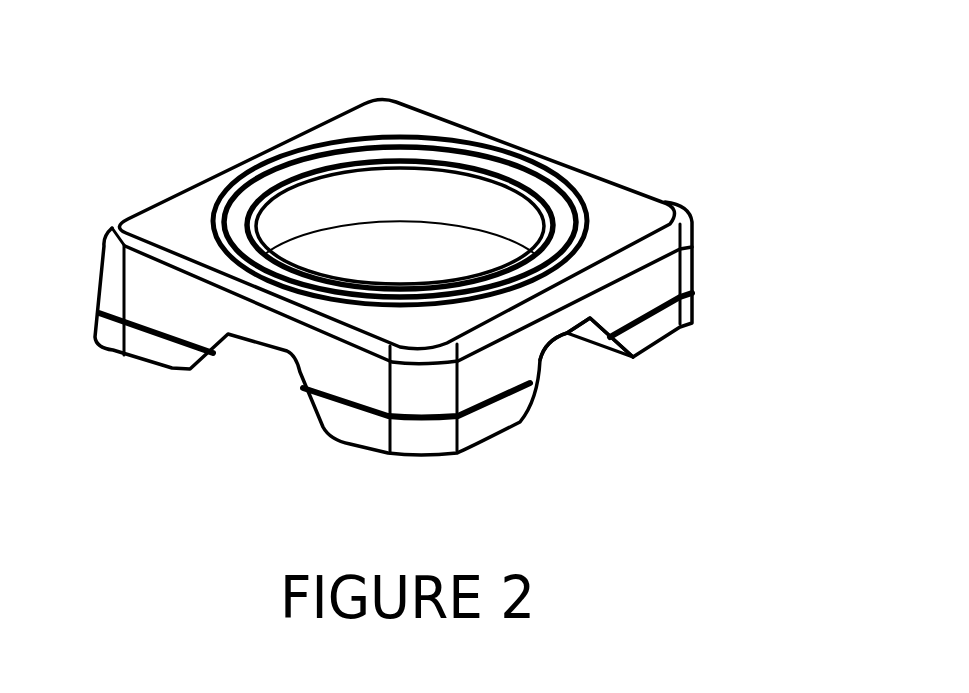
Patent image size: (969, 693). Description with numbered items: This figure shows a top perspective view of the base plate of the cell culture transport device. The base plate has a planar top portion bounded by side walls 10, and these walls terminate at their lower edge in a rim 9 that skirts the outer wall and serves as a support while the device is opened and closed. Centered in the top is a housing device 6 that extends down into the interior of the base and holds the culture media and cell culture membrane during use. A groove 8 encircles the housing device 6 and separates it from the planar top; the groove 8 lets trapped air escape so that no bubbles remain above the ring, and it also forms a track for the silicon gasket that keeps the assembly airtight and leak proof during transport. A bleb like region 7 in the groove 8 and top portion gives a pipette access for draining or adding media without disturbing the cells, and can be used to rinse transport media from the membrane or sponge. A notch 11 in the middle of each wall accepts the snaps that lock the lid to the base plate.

The housing device 6 is at (445, 252).
The bleb like region 7 is at (392, 130).
The groove 8 is at (212, 211).
The rim 9 is at (697, 314).
The side walls 10 is at (695, 277).
The notch 11 is at (633, 357).